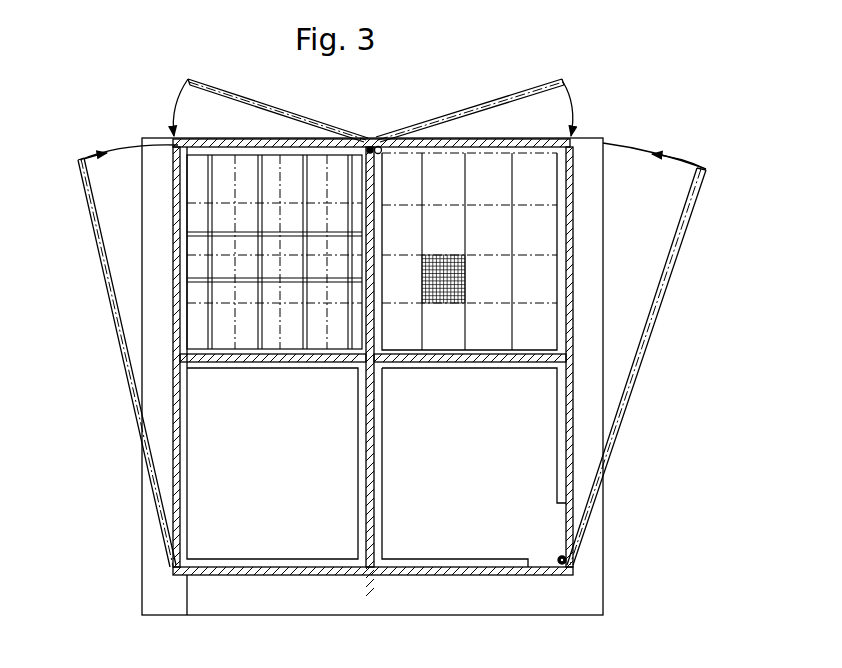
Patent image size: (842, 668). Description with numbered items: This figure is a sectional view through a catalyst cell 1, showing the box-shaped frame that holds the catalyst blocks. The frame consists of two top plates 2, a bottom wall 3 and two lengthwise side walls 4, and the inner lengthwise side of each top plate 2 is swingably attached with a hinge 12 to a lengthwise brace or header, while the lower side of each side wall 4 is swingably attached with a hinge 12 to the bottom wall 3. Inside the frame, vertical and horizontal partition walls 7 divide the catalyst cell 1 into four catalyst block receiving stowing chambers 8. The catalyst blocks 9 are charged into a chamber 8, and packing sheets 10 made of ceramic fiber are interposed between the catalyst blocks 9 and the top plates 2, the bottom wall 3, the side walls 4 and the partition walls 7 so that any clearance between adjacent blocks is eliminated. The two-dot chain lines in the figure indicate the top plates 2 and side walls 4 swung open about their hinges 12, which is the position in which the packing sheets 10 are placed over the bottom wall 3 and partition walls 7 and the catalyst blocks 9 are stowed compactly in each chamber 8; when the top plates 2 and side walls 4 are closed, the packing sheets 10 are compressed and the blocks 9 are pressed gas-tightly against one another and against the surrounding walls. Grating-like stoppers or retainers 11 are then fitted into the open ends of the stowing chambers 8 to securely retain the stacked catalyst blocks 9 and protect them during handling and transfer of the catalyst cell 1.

The catalyst cell 1 is at (546, 124).
The top plate 2 is at (474, 106).
The bottom wall 3 is at (413, 568).
The lengthwise side wall 4 is at (645, 363).
The vertical and horizontal partition walls 7 is at (367, 402).
The stowing chamber 8 is at (202, 517).
The catalyst block 9 is at (440, 292).
The packing sheet 10 is at (188, 442).
The grating-like stopper or retainer 11 is at (264, 175).
The hinge 12 is at (381, 149).